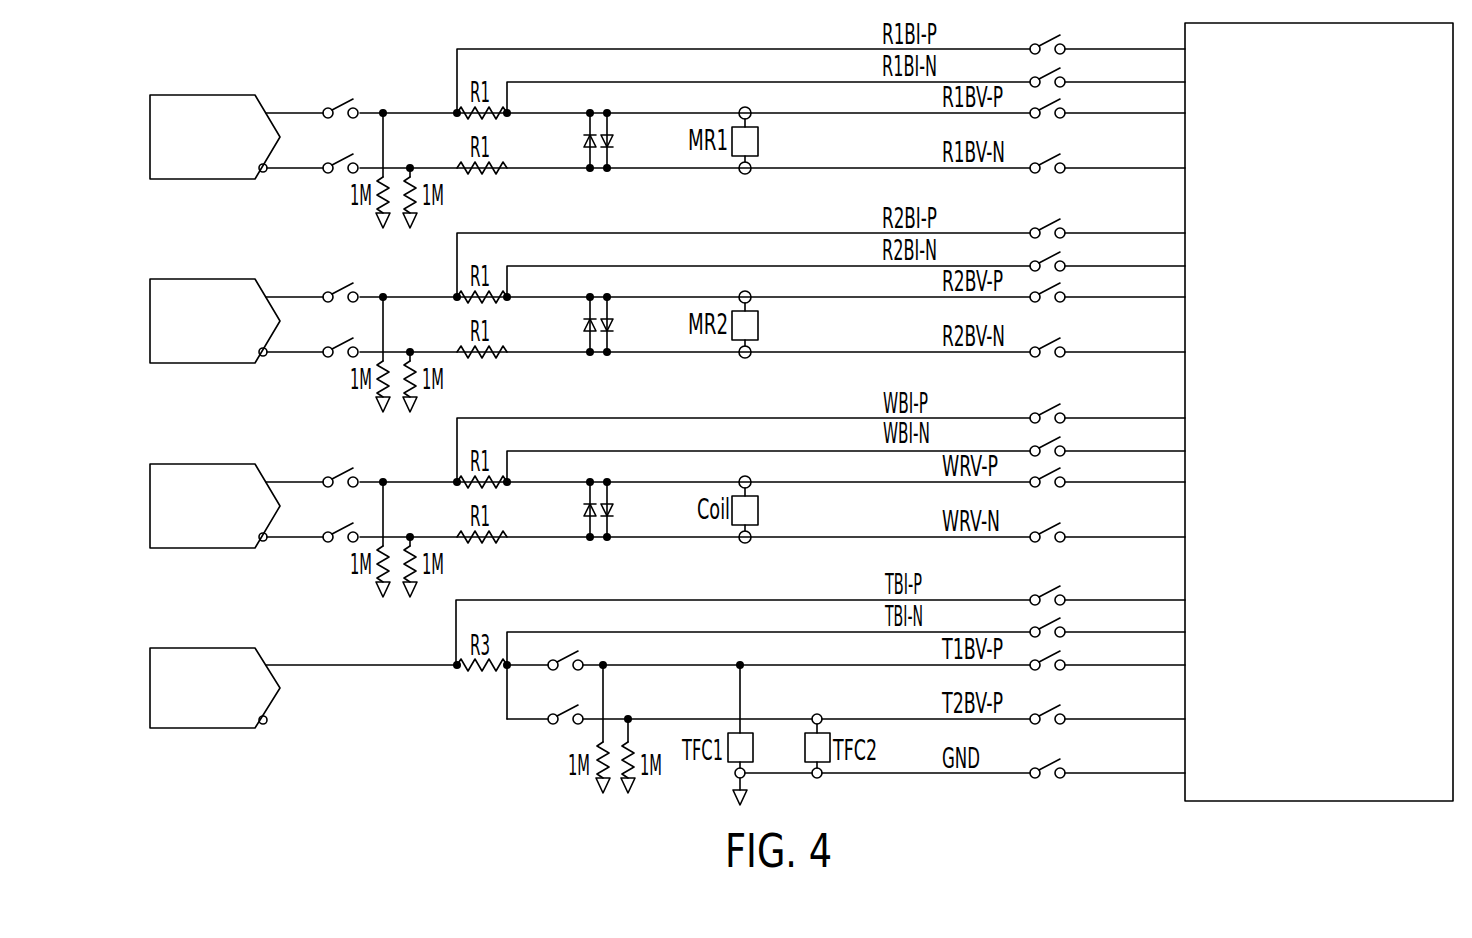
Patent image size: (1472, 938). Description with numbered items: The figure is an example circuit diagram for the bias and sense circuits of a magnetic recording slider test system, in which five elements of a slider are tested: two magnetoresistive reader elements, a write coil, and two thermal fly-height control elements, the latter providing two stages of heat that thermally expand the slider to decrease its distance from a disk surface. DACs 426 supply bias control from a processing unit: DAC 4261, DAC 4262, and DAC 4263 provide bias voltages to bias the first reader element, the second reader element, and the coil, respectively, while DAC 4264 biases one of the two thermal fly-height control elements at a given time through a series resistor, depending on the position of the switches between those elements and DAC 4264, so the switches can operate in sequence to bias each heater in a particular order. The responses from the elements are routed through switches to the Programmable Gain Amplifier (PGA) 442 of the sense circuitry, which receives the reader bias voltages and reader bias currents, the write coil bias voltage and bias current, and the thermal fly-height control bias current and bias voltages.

The DACs 426 is at (181, 411).
The DAC 4261 is at (151, 140).
The DAC 4262 is at (151, 324).
The DAC 4263 is at (151, 509).
The DAC 4264 is at (151, 691).
The Programmable Gain Amplifier (PGA) 442 is at (1338, 461).